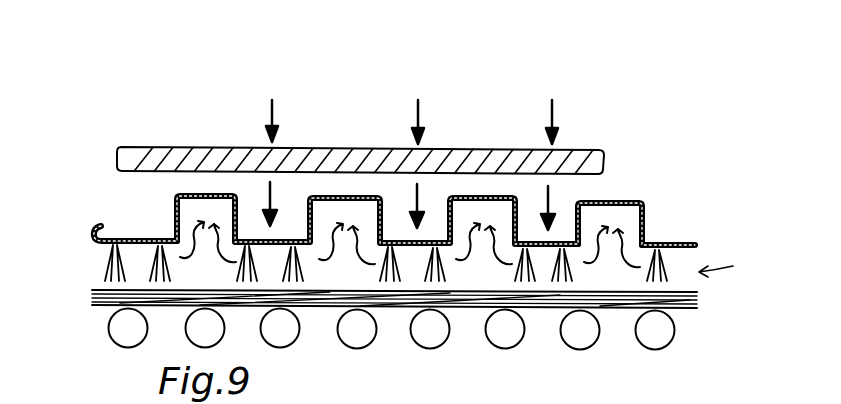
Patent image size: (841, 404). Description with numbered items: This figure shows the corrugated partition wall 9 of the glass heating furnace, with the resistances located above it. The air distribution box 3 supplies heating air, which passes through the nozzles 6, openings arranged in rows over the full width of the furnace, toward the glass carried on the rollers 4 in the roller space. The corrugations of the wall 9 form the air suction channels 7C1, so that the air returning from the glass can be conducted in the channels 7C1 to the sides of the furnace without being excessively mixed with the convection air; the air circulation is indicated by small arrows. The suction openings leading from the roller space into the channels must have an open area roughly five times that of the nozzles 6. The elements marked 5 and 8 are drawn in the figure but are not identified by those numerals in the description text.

The air distribution box 3 is at (131, 192).
The pressure roller 5 is at (207, 158).
The air suction channel 7C1 is at (617, 227).
The corrugated partition wall 9 is at (133, 238).
The conveying direction 8 is at (730, 267).
The nozzle 6 is at (557, 302).
The roller 4 is at (428, 337).